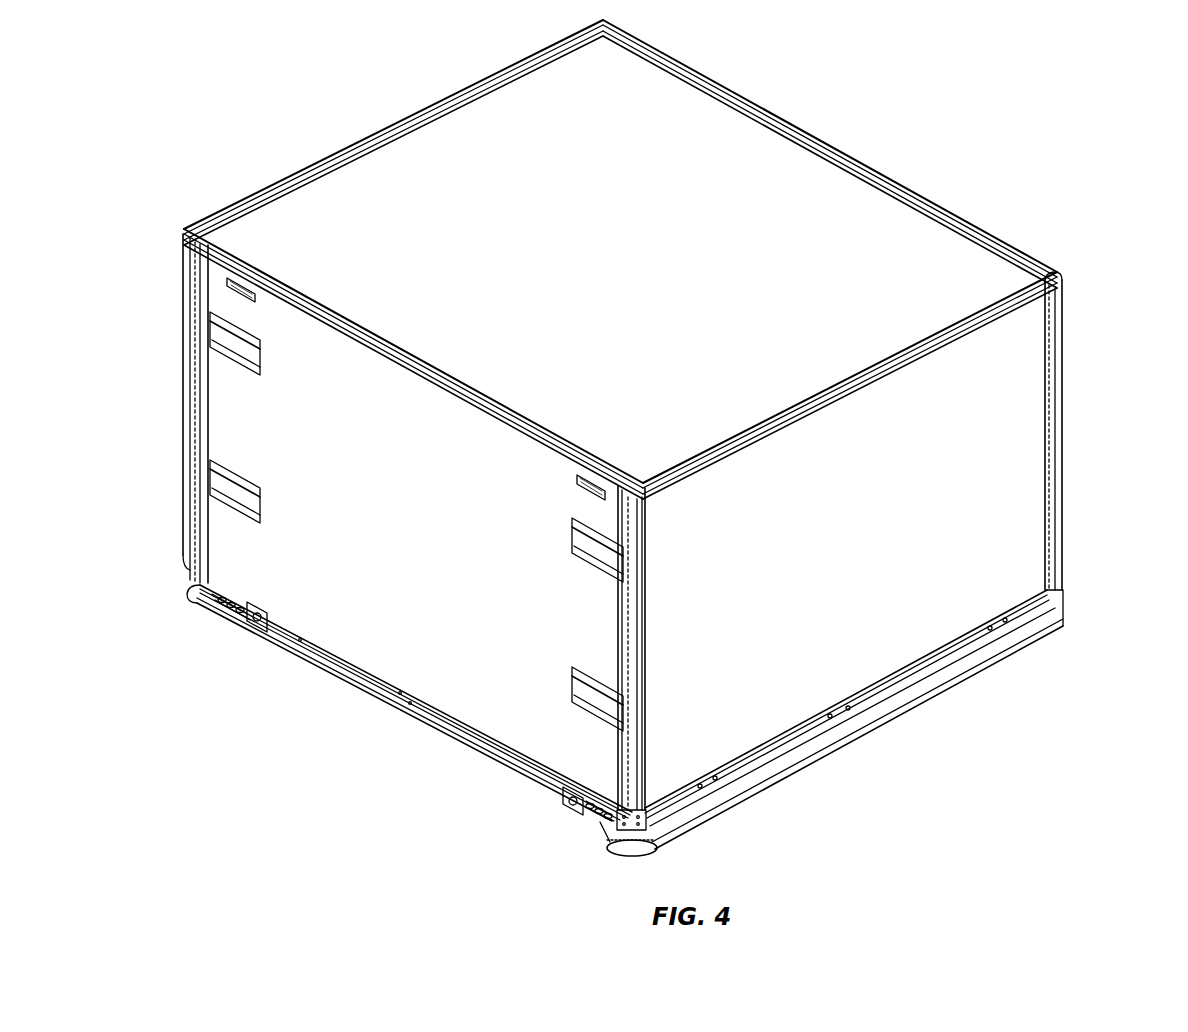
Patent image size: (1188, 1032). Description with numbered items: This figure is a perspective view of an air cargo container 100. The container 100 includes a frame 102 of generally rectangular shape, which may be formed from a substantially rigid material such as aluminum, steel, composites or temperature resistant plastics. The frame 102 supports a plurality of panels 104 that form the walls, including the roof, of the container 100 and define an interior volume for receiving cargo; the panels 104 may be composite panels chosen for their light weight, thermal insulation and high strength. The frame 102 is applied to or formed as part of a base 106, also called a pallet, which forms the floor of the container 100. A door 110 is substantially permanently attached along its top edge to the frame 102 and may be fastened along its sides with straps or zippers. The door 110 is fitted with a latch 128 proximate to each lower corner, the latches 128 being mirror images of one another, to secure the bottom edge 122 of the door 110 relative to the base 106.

The container 100 is at (670, 438).
The frame 102 is at (1052, 517).
The panels 104 is at (621, 423).
The base 106 is at (805, 740).
The door 110 is at (415, 528).
The bottom edge 122 is at (372, 690).
The latch 128 is at (258, 578).